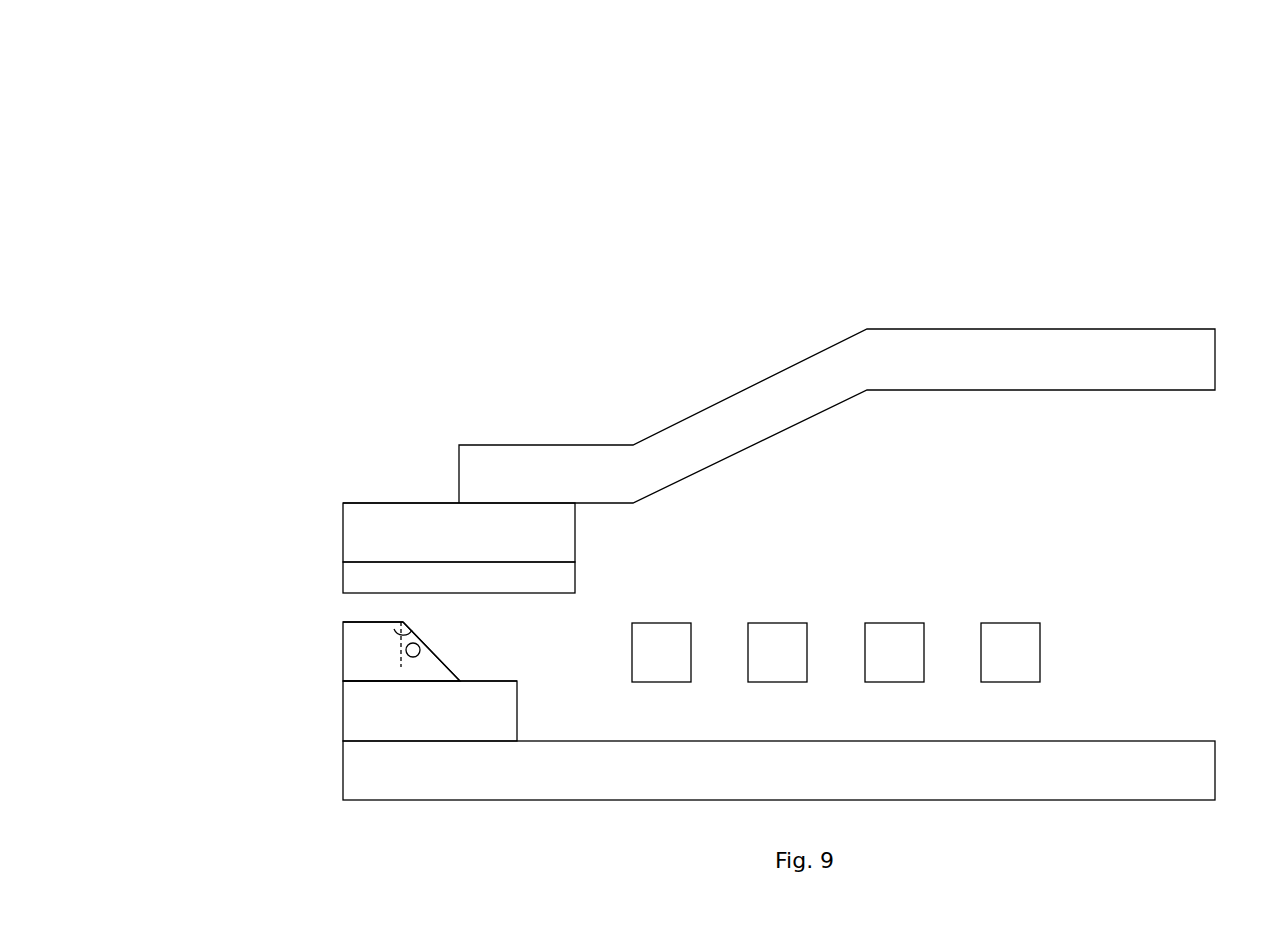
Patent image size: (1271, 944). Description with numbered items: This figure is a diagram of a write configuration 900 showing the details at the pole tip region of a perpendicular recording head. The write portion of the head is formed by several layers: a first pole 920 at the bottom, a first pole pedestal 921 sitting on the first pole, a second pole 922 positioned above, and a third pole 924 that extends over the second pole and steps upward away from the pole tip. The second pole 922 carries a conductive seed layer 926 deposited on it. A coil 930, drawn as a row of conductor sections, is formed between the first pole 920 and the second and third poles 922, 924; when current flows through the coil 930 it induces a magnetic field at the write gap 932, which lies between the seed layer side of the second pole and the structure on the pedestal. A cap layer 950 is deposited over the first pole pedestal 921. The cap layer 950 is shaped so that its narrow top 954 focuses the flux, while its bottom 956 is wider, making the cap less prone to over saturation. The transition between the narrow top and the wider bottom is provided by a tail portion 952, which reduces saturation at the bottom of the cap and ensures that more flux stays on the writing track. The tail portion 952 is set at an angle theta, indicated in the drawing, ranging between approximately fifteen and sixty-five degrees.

The write configuration 900 is at (416, 177).
The first pole 920 is at (357, 770).
The first pole pedestal 921 is at (357, 710).
The second pole 922 is at (358, 518).
The third pole 924 is at (503, 460).
The conductive seed layer 926 is at (372, 577).
The coil 930 is at (675, 638).
The write gap 932 is at (342, 607).
The cap layer 950 is at (357, 652).
The tail portion 952 is at (408, 630).
The narrow top 954 is at (350, 625).
The bottom 956 is at (402, 677).